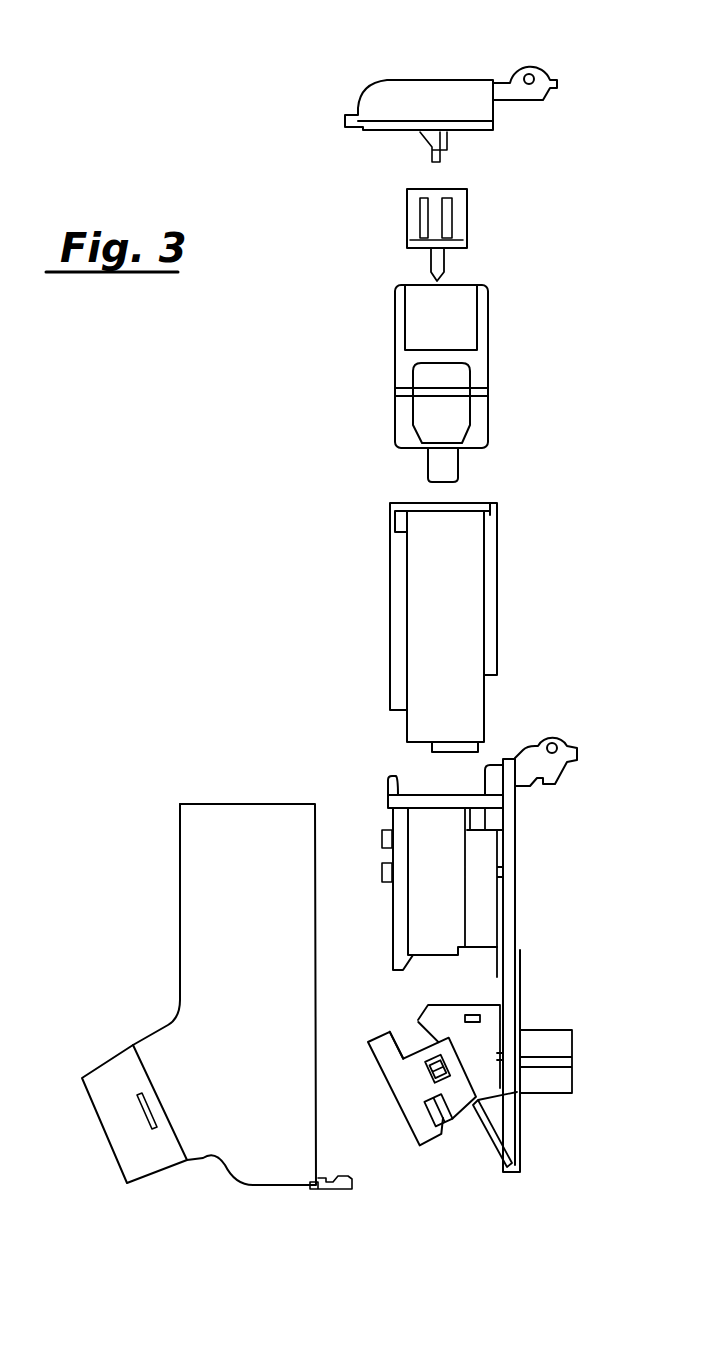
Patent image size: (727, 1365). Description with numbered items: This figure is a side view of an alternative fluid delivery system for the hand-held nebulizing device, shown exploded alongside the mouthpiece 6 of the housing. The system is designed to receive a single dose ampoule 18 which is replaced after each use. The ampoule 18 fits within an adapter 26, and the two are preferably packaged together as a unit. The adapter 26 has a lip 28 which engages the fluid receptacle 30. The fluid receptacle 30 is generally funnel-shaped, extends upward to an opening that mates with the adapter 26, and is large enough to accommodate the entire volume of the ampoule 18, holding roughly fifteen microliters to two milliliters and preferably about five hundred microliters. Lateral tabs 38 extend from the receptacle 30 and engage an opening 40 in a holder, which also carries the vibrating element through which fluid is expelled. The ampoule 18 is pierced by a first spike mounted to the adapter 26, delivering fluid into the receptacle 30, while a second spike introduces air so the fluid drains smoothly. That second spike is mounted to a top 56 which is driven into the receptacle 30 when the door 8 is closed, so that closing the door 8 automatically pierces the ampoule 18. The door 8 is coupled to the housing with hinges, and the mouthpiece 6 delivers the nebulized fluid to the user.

The mouthpiece 6 is at (203, 1143).
The door 8 is at (423, 98).
The ampoule 18 is at (475, 380).
The adapter 26 is at (490, 620).
The lip 28 is at (487, 748).
The fluid receptacle 30 is at (466, 1058).
The lateral tabs 38 is at (440, 1066).
The opening 40 is at (430, 1048).
The top 56 is at (453, 223).